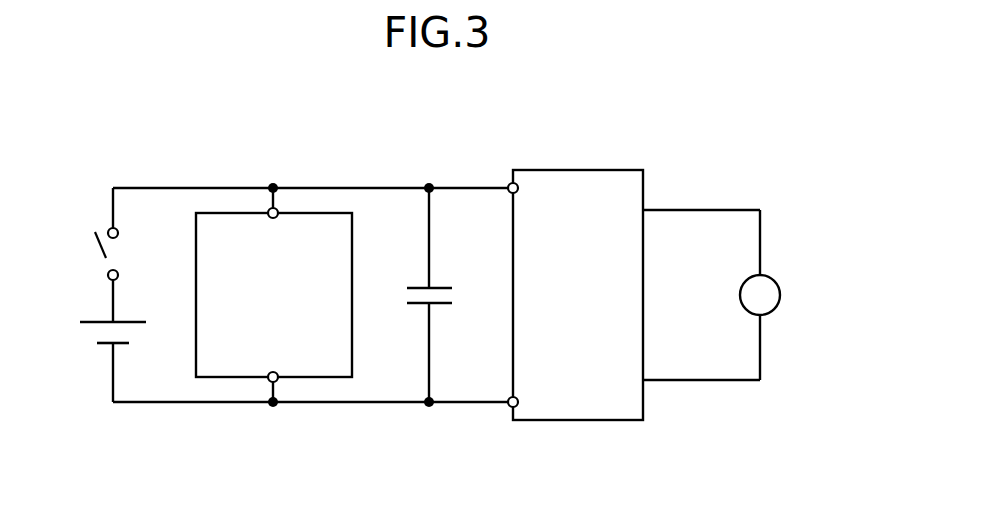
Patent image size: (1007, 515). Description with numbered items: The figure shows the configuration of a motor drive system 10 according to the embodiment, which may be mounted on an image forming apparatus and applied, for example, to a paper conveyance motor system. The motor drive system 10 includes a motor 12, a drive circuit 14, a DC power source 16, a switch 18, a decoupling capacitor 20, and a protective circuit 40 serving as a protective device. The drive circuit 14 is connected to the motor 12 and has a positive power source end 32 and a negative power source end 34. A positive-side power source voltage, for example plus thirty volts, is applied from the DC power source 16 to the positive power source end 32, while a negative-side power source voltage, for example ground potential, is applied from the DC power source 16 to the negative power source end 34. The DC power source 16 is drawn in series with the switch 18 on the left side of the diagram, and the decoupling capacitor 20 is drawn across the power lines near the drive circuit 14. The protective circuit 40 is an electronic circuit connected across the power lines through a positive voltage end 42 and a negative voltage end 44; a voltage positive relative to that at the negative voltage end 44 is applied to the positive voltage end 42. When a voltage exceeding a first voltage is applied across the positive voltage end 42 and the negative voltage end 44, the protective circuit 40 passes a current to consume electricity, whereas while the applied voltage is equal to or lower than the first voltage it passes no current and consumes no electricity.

The motor drive system 10 is at (385, 100).
The motor 12 is at (781, 297).
The drive circuit 14 is at (607, 169).
The DC power source 16 is at (95, 322).
The switch 18 is at (103, 253).
The decoupling capacitor 20 is at (437, 287).
The positive power source end 32 is at (511, 180).
The negative power source end 34 is at (510, 410).
The protective circuit 40 is at (354, 229).
The positive voltage end 42 is at (268, 207).
The negative voltage end 44 is at (268, 381).